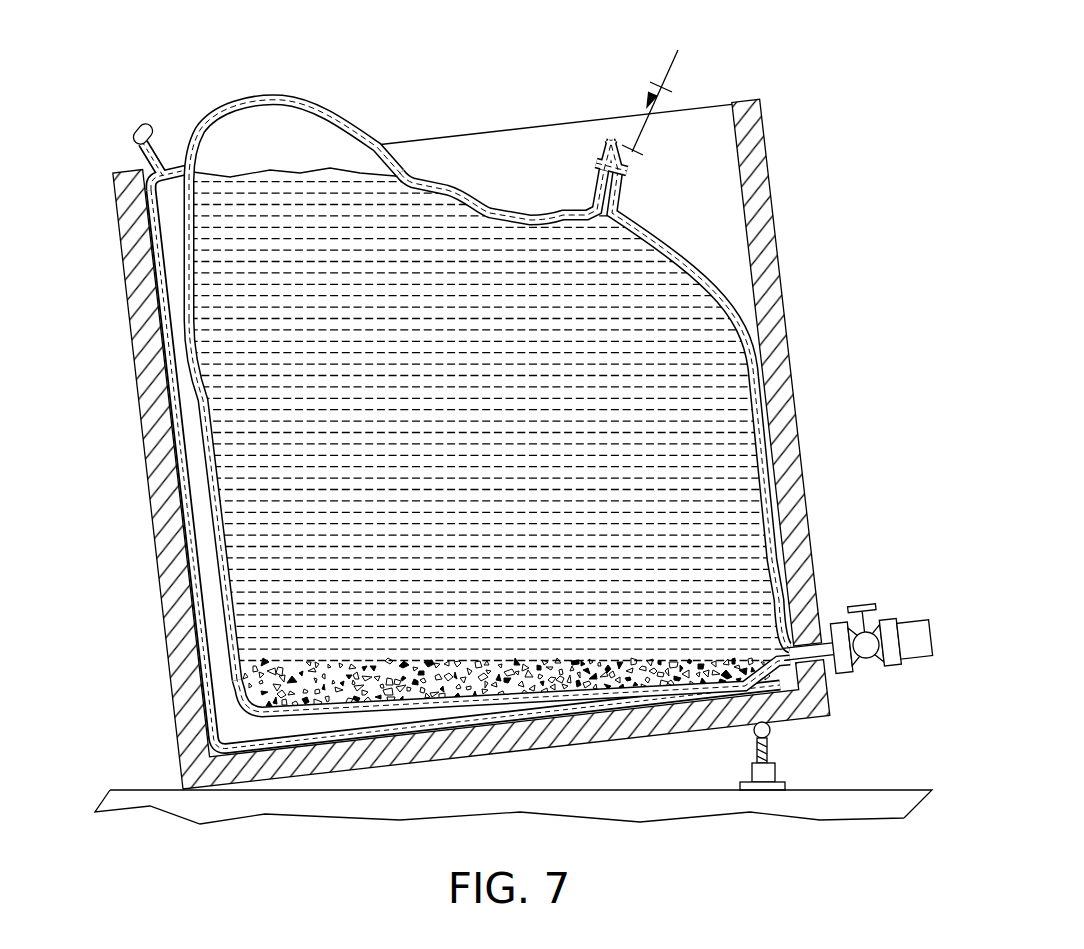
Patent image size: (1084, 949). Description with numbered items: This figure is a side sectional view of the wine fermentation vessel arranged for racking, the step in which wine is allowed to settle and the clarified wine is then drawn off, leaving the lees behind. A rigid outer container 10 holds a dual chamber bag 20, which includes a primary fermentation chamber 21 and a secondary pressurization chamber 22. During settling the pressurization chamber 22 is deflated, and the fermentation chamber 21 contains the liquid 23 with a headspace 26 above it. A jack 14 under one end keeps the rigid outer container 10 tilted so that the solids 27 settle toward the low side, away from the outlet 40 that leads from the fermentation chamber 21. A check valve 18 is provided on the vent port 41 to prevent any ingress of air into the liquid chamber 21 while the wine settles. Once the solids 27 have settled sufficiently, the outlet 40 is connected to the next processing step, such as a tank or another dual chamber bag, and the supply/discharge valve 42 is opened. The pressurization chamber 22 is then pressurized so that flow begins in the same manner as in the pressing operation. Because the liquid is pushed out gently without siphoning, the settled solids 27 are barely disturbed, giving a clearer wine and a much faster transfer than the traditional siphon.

The rigid outer container 10 is at (781, 261).
The jack 14 is at (770, 750).
The check valve 18 is at (651, 98).
The dual chamber bag 20 is at (444, 367).
The fermentation chamber 21 is at (418, 230).
The pressurization chamber 22 is at (92, 316).
The fermenting must 23 is at (258, 568).
The headspace 26 is at (316, 138).
The solids 27 is at (230, 657).
The outlet 40 is at (861, 662).
The vent port 41 is at (620, 205).
The supply/discharge valve 42 is at (868, 660).